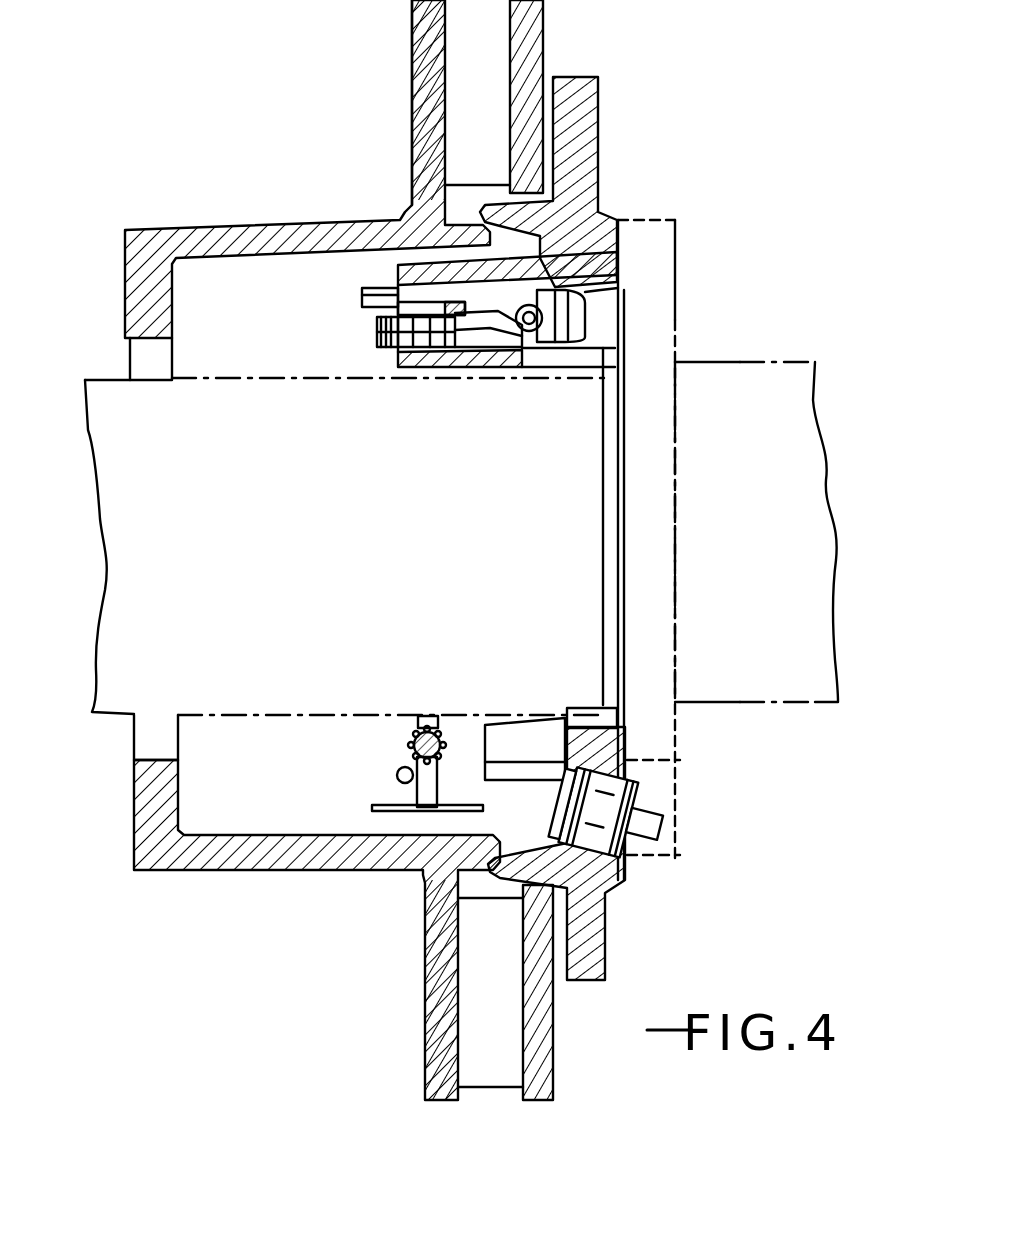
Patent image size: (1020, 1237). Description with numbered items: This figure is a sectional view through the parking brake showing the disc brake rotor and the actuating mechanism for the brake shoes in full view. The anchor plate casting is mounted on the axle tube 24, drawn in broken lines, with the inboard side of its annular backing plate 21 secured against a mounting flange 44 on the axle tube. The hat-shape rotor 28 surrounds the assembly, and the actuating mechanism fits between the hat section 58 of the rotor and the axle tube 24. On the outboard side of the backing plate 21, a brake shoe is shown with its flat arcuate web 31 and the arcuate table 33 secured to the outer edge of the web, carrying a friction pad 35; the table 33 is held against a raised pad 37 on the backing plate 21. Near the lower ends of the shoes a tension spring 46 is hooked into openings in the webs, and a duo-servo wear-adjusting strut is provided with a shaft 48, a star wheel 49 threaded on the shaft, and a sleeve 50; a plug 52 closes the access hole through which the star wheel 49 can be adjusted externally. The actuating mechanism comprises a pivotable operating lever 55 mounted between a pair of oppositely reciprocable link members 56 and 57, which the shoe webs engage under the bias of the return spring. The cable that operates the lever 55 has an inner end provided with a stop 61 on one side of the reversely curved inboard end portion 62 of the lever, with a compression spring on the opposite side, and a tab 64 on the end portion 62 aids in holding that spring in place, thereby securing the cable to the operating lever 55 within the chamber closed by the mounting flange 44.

The annular backing plate 21 is at (598, 147).
The axle tube 24 is at (107, 378).
The hat-shape rotor 28 is at (416, 880).
The web 31 is at (428, 713).
The table 33 is at (362, 300).
The friction pad 35 is at (378, 290).
The raised pad 37 is at (535, 715).
The mounting flange 44 is at (680, 248).
The tension spring 46 is at (396, 776).
The shaft 48 is at (410, 747).
The star wheel 49 is at (455, 742).
The sleeve 50 is at (470, 745).
The plug 52 is at (668, 825).
The pivotable operating lever 55 is at (377, 330).
The link member 56 is at (398, 306).
The link member 57 is at (370, 335).
The hat section 58 is at (320, 871).
The stop 61 is at (540, 322).
The reversely curved inboard end portion 62 is at (585, 325).
The tab 64 is at (615, 290).